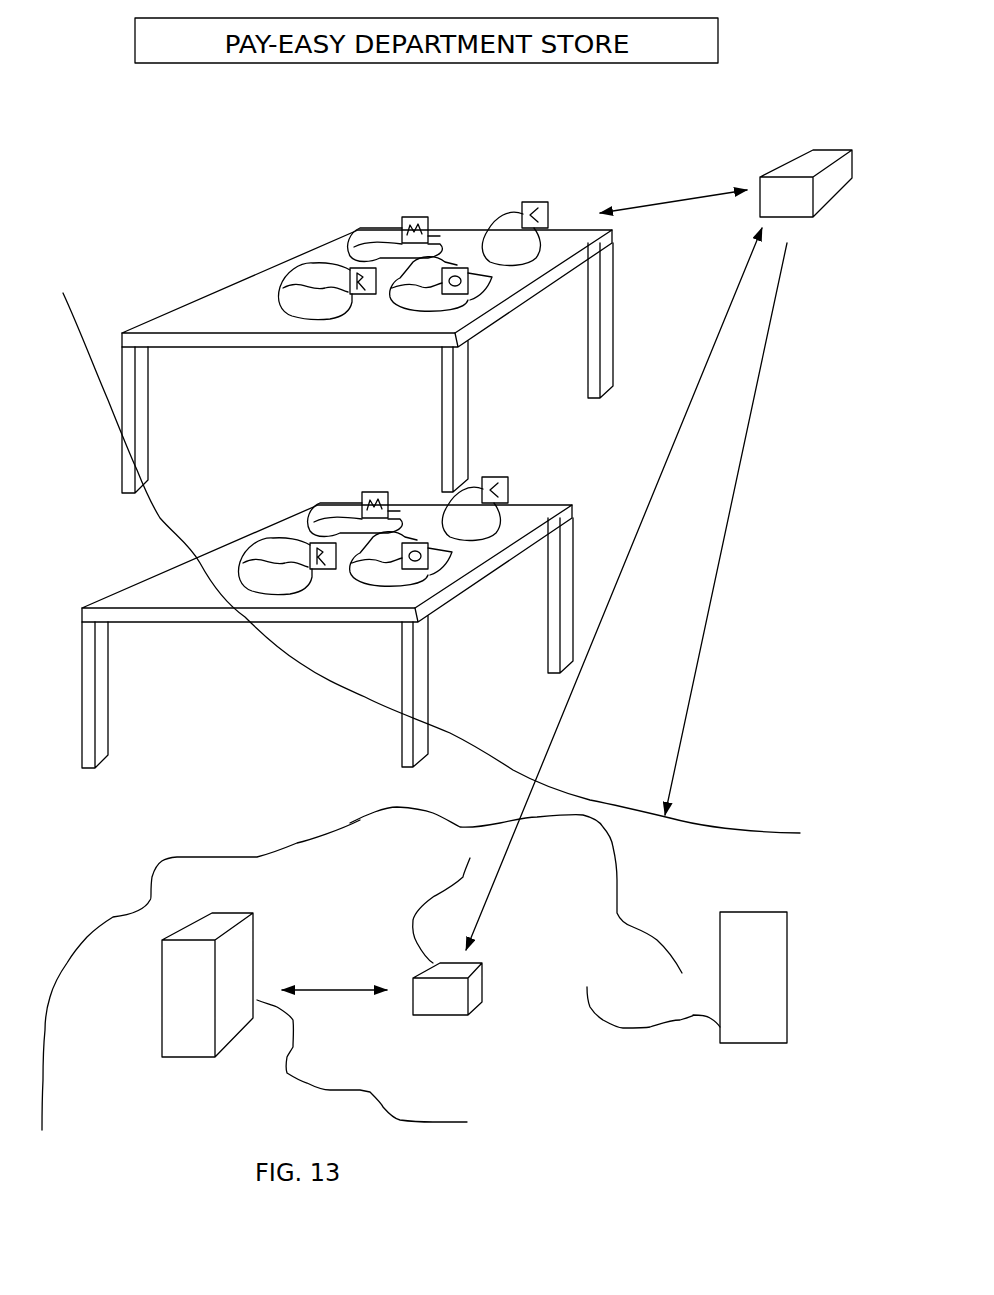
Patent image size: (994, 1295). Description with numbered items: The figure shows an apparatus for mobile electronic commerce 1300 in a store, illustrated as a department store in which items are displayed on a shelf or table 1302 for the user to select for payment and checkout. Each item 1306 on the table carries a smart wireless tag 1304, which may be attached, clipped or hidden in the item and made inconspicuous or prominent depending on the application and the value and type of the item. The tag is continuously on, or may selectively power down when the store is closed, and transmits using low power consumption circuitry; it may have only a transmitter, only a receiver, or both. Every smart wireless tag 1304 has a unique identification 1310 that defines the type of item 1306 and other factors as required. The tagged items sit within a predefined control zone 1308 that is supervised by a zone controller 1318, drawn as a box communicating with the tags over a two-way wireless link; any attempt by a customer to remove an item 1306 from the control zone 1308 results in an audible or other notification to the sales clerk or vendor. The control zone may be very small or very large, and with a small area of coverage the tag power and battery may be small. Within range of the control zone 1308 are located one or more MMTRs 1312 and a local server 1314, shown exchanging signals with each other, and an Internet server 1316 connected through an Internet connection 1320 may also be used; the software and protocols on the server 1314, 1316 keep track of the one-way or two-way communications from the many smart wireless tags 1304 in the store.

The apparatus for mobile electronic commerce 1300 is at (215, 217).
The shelf or table 1302 is at (190, 296).
The smart wireless tag 1304 is at (533, 202).
The item 1306 is at (507, 240).
The control zone 1308 is at (772, 898).
The unique identification (ID) 1310 is at (548, 205).
The MMTR 1312 is at (495, 977).
The local server 1314 is at (268, 950).
The Internet server 1316 is at (707, 940).
The zone controller 1318 is at (788, 152).
The Internet connection 1320 is at (640, 1043).